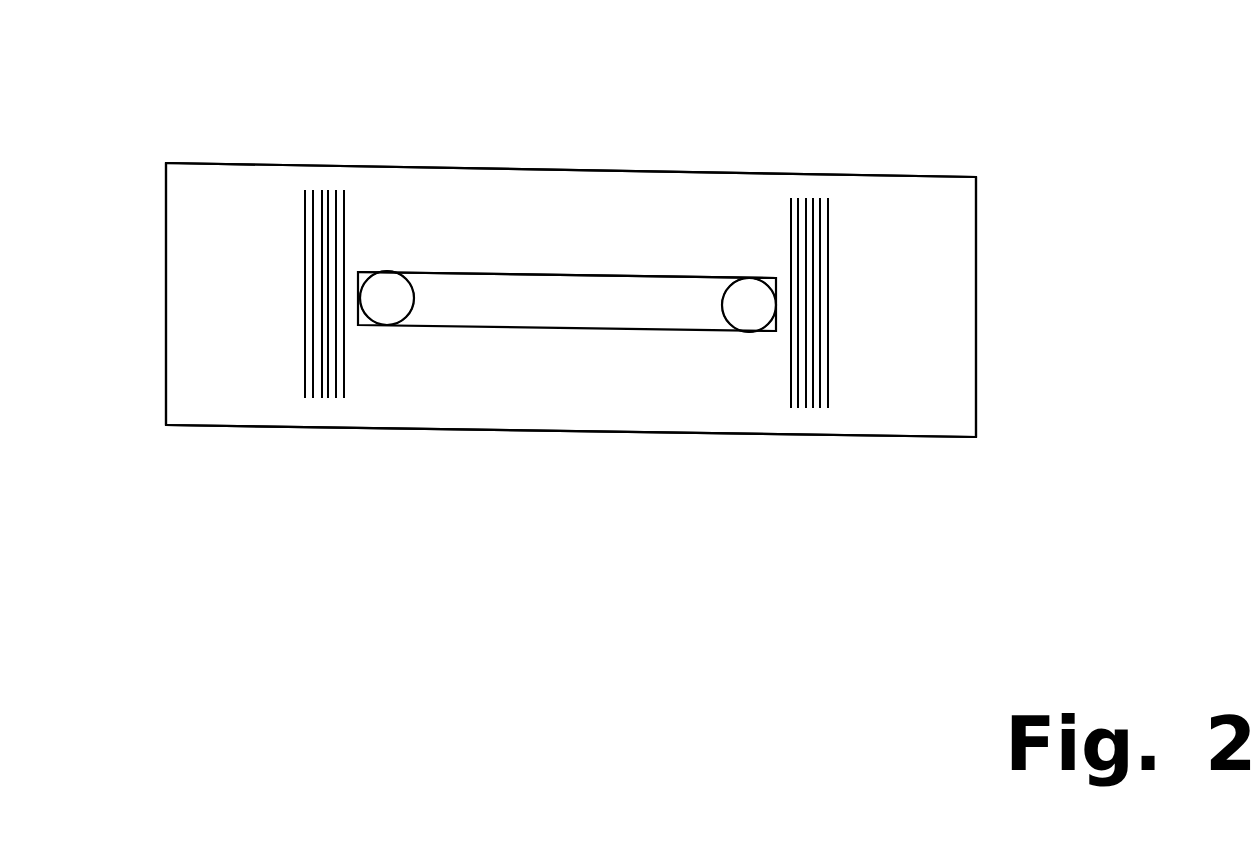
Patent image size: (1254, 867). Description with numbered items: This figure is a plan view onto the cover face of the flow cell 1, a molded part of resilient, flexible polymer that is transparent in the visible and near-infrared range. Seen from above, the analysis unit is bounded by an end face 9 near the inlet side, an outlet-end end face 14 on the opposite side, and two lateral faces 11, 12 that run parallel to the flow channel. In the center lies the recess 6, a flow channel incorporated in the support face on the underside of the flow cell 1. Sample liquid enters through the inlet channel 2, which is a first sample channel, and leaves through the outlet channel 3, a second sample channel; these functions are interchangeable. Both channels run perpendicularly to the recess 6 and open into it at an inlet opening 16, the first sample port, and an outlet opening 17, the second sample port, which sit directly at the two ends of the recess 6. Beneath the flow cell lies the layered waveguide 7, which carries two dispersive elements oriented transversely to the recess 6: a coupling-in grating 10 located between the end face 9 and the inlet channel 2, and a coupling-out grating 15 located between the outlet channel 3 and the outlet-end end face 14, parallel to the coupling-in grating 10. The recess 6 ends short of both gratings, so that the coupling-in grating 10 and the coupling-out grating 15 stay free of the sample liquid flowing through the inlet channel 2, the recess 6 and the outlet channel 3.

The flow cell 1 is at (986, 246).
The inlet channel 2 is at (413, 307).
The outlet channel 3 is at (722, 313).
The recess 6 is at (548, 312).
The waveguide 7 is at (630, 303).
The end face 9 is at (165, 313).
The coupling-in grating 10 is at (282, 284).
The lateral face 11 is at (283, 428).
The lateral face 12 is at (528, 167).
The outlet-end end face 14 is at (976, 329).
The coupling-out grating 15 is at (856, 315).
The inlet opening 16 is at (388, 295).
The outlet opening 17 is at (749, 300).